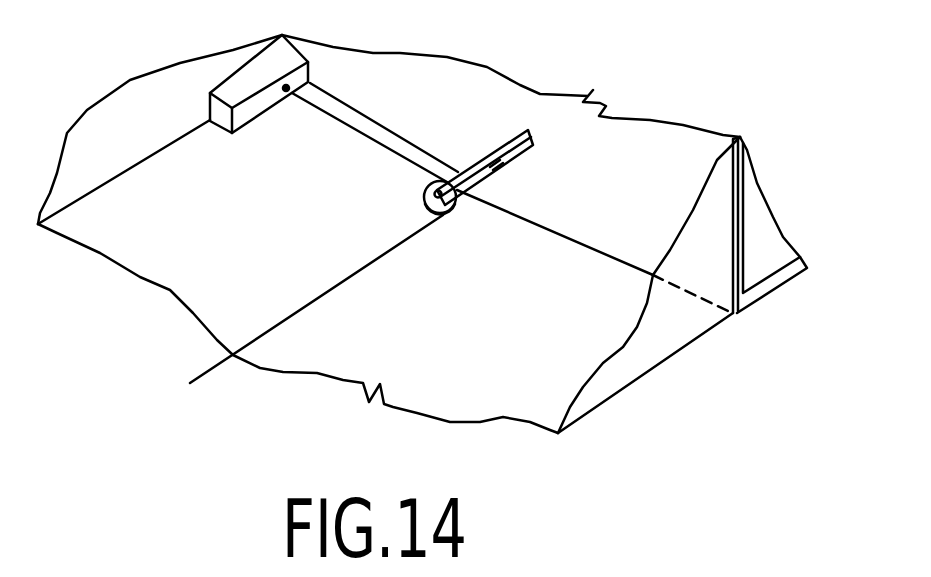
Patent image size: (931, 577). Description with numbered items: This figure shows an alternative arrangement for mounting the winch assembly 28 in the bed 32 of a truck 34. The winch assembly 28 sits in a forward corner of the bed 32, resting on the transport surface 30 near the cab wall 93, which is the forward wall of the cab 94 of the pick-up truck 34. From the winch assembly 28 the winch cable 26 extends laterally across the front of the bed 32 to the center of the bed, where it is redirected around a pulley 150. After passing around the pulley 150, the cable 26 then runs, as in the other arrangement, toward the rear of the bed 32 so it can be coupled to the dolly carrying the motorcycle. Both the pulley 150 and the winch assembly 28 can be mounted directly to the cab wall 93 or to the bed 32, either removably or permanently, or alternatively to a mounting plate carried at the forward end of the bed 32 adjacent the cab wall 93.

The winch cable 26 is at (334, 290).
The winch assembly 28 is at (253, 107).
The transport surface 30 is at (249, 275).
The bed 32 is at (606, 328).
The truck 34 is at (716, 89).
The cab wall 93 is at (641, 187).
The cab 94 is at (783, 220).
The pulley 150 is at (467, 211).